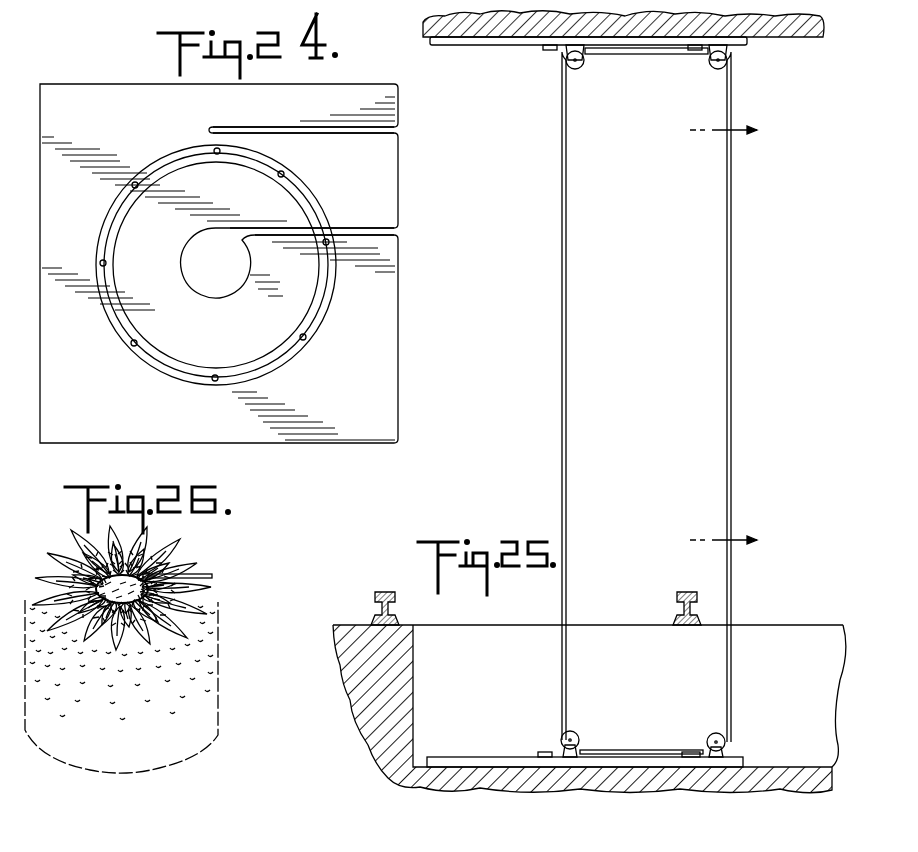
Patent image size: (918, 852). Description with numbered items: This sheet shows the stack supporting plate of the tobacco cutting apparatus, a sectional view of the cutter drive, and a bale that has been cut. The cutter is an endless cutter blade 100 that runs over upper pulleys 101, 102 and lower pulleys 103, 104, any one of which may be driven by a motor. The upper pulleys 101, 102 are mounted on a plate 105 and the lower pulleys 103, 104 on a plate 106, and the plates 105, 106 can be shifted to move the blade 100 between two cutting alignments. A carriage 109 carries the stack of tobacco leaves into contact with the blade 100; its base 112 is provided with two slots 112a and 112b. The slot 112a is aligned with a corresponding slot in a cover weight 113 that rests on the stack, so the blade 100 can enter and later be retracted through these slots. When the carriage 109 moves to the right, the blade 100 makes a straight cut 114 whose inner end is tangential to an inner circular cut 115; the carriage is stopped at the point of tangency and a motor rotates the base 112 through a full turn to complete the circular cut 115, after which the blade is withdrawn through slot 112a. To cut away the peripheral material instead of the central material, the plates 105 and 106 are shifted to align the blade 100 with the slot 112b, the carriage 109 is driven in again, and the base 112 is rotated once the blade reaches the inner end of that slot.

In FIG. 25, the cutter blade 100 is at (567, 311).
In FIG. 25, the upper pulley 101 is at (582, 68).
In FIG. 25, the upper pulley 102 is at (708, 67).
In FIG. 25, the lower pulley 103 is at (575, 733).
In FIG. 25, the lower pulley 104 is at (714, 732).
In FIG. 25, the plate 105 is at (480, 42).
In FIG. 25, the plate 106 is at (478, 757).
In FIG. 24, the carriage 109 is at (41, 7).
In FIG. 24, the cover weight 113 is at (129, 4).
In FIG. 24, the base 112 is at (388, 186).
In FIG. 24, the slot 112a is at (398, 238).
In FIG. 24, the slot 112b is at (398, 129).
In FIG. 26, the straight cut 114 is at (183, 573).
In FIG. 26, the inner circular cut 115 is at (141, 607).